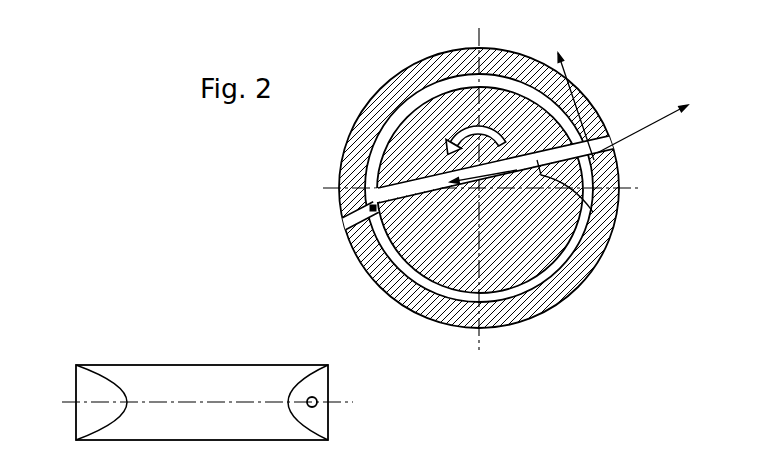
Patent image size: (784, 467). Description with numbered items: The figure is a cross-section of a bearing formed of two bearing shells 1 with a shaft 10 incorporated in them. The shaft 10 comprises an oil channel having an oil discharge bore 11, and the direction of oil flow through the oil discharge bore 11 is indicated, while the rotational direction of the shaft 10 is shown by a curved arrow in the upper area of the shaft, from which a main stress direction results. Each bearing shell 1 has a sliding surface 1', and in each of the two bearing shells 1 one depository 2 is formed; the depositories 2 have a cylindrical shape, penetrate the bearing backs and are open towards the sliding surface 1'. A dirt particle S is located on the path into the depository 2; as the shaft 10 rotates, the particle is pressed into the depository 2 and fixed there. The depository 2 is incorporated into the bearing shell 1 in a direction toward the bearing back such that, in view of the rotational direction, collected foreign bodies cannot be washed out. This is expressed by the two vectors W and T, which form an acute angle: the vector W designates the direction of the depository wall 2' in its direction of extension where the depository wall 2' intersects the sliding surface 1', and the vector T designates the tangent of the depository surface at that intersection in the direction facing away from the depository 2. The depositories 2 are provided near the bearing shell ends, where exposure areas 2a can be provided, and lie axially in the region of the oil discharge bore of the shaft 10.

The bearing shell 1 is at (466, 185).
The sliding surface 1' is at (516, 54).
The shaft 10 is at (537, 124).
The depository 2 is at (359, 307).
The depository wall 2' is at (506, 144).
The exposure area 2a is at (322, 390).
The oil discharge bore 11 is at (612, 216).
The dirt particle S is at (371, 206).
The vector T is at (578, 51).
The vector W is at (689, 115).